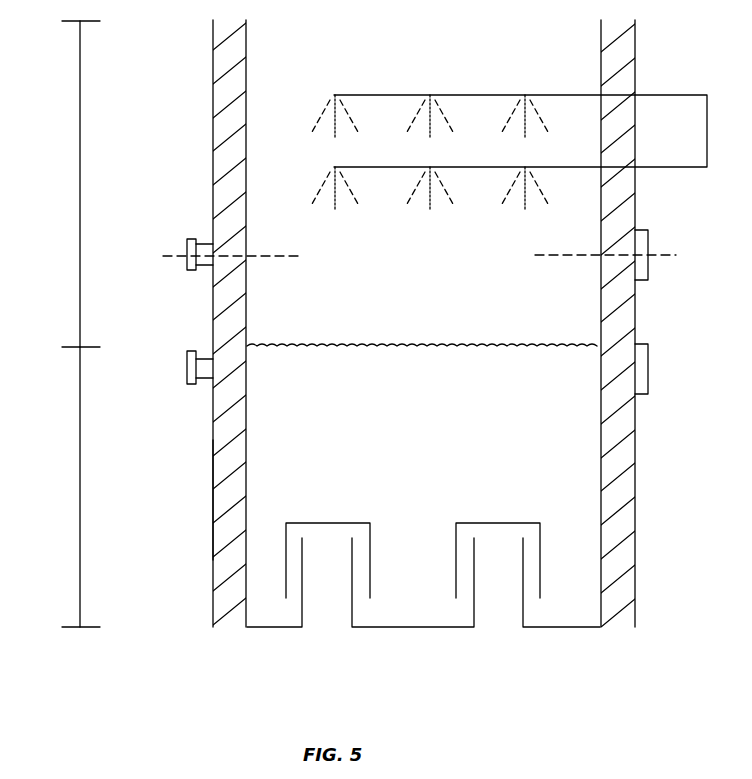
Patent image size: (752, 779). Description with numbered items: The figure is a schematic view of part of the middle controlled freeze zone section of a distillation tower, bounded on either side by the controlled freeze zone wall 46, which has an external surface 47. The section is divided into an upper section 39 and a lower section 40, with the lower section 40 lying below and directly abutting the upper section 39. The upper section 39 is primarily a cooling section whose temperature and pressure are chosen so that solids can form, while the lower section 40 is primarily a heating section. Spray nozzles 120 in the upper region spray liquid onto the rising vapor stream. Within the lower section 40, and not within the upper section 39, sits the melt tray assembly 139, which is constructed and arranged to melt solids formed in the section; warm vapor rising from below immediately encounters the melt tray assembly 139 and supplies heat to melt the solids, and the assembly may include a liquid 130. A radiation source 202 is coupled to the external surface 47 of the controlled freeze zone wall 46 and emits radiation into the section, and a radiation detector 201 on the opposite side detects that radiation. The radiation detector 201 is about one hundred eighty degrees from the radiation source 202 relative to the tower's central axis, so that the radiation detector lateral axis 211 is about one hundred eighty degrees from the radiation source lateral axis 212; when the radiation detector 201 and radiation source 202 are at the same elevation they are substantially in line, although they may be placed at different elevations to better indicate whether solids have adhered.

The upper section 39 is at (80, 181).
The lower section 40 is at (80, 493).
The controlled freeze zone wall 46 is at (211, 582).
The external surface 47 is at (213, 500).
The spray nozzle 120 is at (330, 205).
The liquid 130 is at (555, 345).
The melt tray assembly 139 is at (447, 513).
The radiation detector 201 is at (649, 241).
The radiation source 202 is at (189, 238).
The radiation detector lateral axis 211 is at (604, 255).
The radiation source lateral axis 212 is at (231, 256).